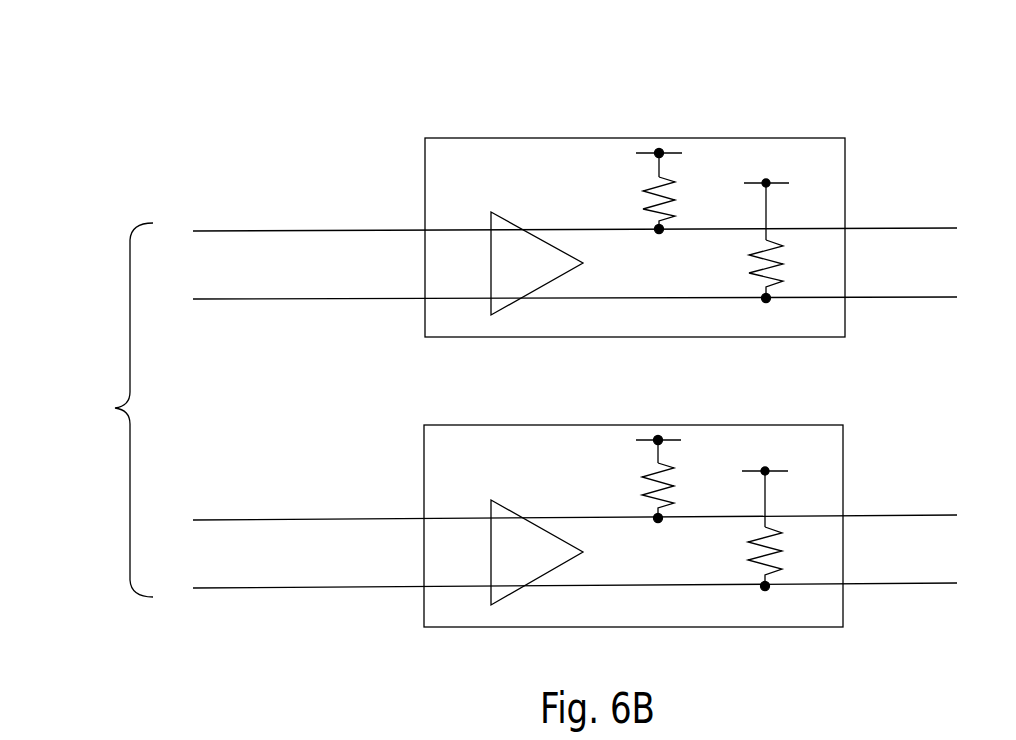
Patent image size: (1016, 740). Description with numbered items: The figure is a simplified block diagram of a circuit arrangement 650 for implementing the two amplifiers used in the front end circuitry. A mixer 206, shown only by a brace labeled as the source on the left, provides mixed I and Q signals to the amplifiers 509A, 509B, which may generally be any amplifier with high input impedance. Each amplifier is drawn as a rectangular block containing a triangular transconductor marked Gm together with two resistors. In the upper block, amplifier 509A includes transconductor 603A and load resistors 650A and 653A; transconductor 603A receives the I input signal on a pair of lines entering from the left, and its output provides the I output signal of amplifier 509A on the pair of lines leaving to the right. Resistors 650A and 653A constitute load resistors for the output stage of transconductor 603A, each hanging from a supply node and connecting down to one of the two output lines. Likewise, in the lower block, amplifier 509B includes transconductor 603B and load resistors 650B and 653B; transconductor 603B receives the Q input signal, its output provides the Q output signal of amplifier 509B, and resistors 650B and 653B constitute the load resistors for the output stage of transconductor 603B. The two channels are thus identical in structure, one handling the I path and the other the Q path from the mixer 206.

The circuit arrangement 650 is at (656, 62).
The mixer 206 is at (96, 410).
The amplifier 509A is at (667, 137).
The amplifier 509B is at (657, 425).
The transconductor 603A is at (490, 214).
The transconductor 603B is at (490, 503).
The load resistor 650A is at (650, 177).
The load resistor 650B is at (650, 465).
The load resistor 653A is at (757, 241).
The load resistor 653B is at (757, 529).